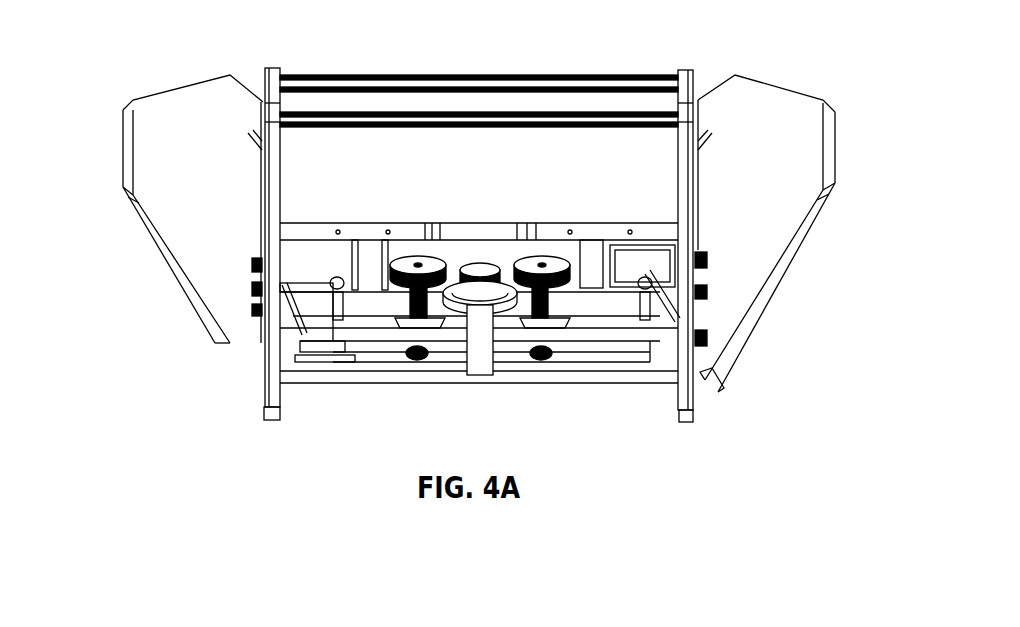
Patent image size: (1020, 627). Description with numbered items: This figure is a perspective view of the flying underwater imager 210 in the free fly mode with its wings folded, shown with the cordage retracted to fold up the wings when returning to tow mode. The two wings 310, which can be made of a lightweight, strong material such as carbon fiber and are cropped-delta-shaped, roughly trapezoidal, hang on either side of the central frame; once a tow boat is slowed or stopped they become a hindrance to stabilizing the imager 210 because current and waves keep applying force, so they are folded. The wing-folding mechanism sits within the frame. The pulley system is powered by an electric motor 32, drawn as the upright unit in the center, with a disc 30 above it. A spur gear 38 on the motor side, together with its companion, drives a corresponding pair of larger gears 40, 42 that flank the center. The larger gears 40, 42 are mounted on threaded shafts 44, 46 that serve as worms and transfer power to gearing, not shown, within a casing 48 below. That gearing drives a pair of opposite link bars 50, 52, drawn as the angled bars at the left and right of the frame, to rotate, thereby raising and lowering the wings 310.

The underwater imager 210 is at (696, 32).
The wings 310 is at (123, 150).
The disc 30 is at (470, 250).
The electric motor 32 is at (473, 352).
The spur gear 38 is at (507, 255).
The larger gear 40 is at (408, 265).
The larger gear 42 is at (557, 265).
The threaded shaft 44 is at (410, 305).
The threaded shaft 46 is at (548, 305).
The casing 48 is at (323, 338).
The link bar 50 is at (292, 320).
The link bar 52 is at (673, 303).